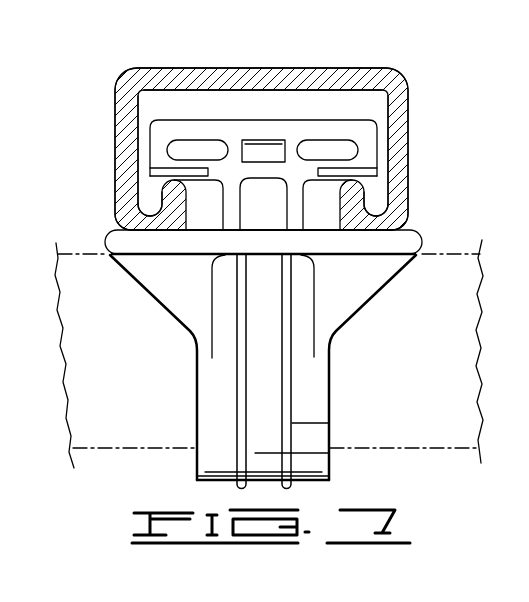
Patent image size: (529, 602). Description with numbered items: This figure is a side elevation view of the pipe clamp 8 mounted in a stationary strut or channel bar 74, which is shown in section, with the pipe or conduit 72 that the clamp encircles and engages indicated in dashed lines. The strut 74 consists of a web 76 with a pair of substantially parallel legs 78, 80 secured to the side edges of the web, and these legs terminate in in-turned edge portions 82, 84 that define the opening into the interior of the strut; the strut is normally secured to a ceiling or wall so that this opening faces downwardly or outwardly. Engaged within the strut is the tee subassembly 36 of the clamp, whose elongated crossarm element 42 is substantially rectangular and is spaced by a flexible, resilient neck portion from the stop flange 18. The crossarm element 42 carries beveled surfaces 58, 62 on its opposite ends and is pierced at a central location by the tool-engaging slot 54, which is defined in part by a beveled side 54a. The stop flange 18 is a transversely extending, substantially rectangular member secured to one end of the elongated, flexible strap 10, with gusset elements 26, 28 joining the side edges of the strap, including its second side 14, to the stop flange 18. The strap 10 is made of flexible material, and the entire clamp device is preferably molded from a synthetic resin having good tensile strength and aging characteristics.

The pipe clamp 8 is at (184, 456).
The elongated flexible strap 10 is at (314, 382).
The second side 14 is at (278, 389).
The stop flange 18 is at (404, 237).
The gusset element 26 is at (353, 297).
The gusset element 28 is at (163, 295).
The tee subassembly 36 is at (366, 108).
The crossarm element 42 is at (263, 166).
The slot 54 is at (259, 140).
The beveled side 54a is at (270, 152).
The beveled surface 58 is at (357, 178).
The beveled surface 62 is at (153, 175).
The pipe or conduit 72 is at (100, 422).
The strut or channel bar 74 is at (126, 60).
The web 76 is at (265, 73).
The leg 78 is at (122, 133).
The leg 80 is at (400, 128).
The in-turned edge portion 82 is at (177, 202).
The in-turned edge portion 84 is at (348, 200).